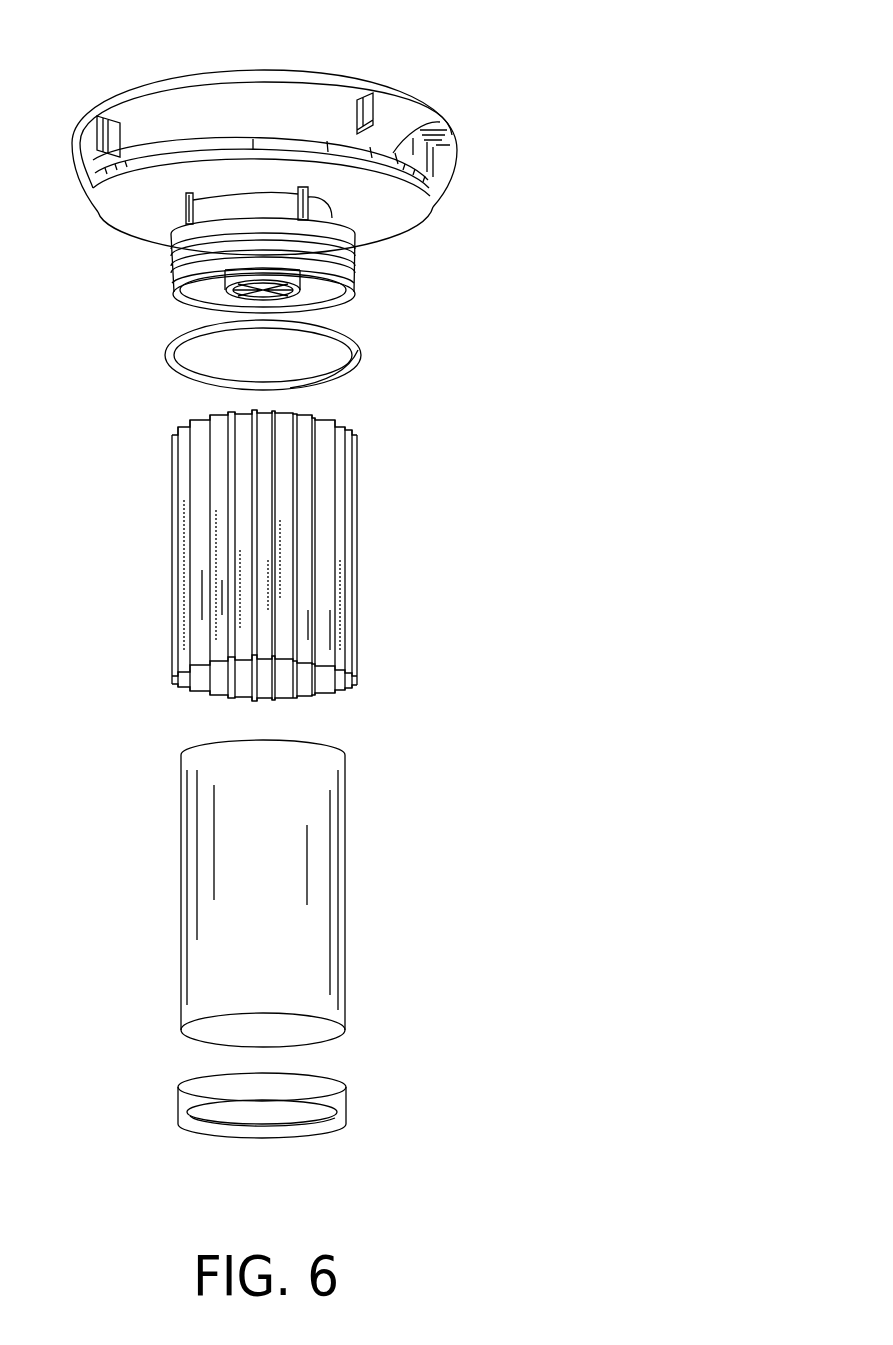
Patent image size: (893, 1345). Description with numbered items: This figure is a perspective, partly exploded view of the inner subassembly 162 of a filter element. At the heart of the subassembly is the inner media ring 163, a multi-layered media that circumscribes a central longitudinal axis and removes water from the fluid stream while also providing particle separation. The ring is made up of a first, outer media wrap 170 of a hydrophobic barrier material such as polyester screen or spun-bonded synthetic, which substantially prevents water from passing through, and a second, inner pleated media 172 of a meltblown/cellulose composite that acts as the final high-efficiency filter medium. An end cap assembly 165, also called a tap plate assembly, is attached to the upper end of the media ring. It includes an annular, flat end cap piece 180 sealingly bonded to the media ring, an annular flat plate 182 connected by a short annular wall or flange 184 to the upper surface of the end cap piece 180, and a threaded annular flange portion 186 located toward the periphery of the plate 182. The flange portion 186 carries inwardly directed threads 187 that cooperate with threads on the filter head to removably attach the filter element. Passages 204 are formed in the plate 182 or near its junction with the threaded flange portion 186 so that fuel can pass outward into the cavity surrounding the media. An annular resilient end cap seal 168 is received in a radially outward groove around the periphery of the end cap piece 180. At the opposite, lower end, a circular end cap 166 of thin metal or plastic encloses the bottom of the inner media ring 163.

The inner subassembly 162 is at (552, 219).
The end cap assembly 165 is at (457, 152).
The threaded annular flange portion 186 is at (177, 125).
The passages 204 is at (298, 157).
The annular wall or flange 184 is at (150, 247).
The annular flat plate 182 is at (400, 244).
The threads 187 is at (360, 257).
The end cap piece 180 is at (340, 297).
The end cap seal 168 is at (340, 380).
The inner pleated media 172 is at (330, 473).
The inner media ring 163 is at (358, 823).
The outer media wrap 170 is at (325, 928).
The circular end cap 166 is at (337, 1127).